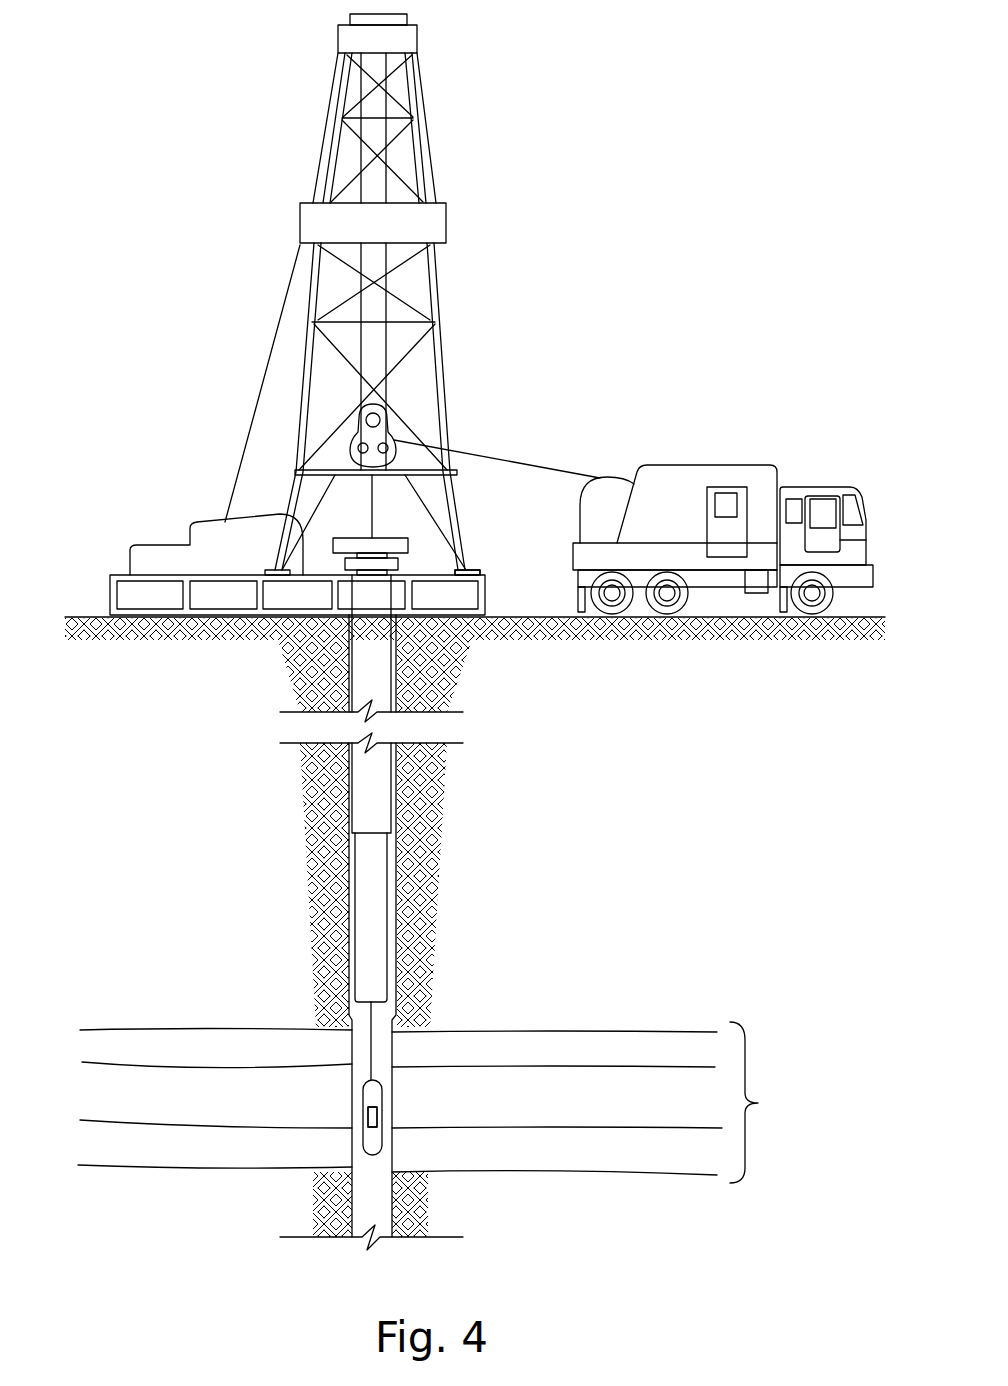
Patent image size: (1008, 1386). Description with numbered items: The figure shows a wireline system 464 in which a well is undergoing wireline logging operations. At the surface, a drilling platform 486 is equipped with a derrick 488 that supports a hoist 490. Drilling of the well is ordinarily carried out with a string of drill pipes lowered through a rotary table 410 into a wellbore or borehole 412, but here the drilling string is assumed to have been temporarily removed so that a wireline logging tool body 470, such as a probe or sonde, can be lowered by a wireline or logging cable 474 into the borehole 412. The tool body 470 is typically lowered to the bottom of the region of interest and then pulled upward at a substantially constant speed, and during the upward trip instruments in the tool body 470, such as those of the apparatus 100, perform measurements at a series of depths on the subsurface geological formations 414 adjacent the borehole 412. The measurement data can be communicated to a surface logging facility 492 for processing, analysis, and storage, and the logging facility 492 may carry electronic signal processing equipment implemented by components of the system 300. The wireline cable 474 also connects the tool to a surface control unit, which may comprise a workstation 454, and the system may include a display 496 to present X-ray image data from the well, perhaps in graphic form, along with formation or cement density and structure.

The wireline system 464 is at (662, 148).
The hoist 490 is at (386, 412).
The wireline or logging cable 474 is at (503, 455).
The rotary table 410 is at (406, 537).
The derrick 488 is at (470, 568).
The drilling platform 486 is at (487, 598).
The wellbore or borehole 412 is at (352, 1043).
The wireline logging tool body 470 is at (376, 1080).
The apparatus 100 is at (377, 1115).
The system 300 is at (377, 1115).
The subsurface geological formations 414 is at (444, 1102).
The surface logging facility 492 is at (670, 465).
The workstation 454 is at (707, 533).
The display 496 is at (725, 493).